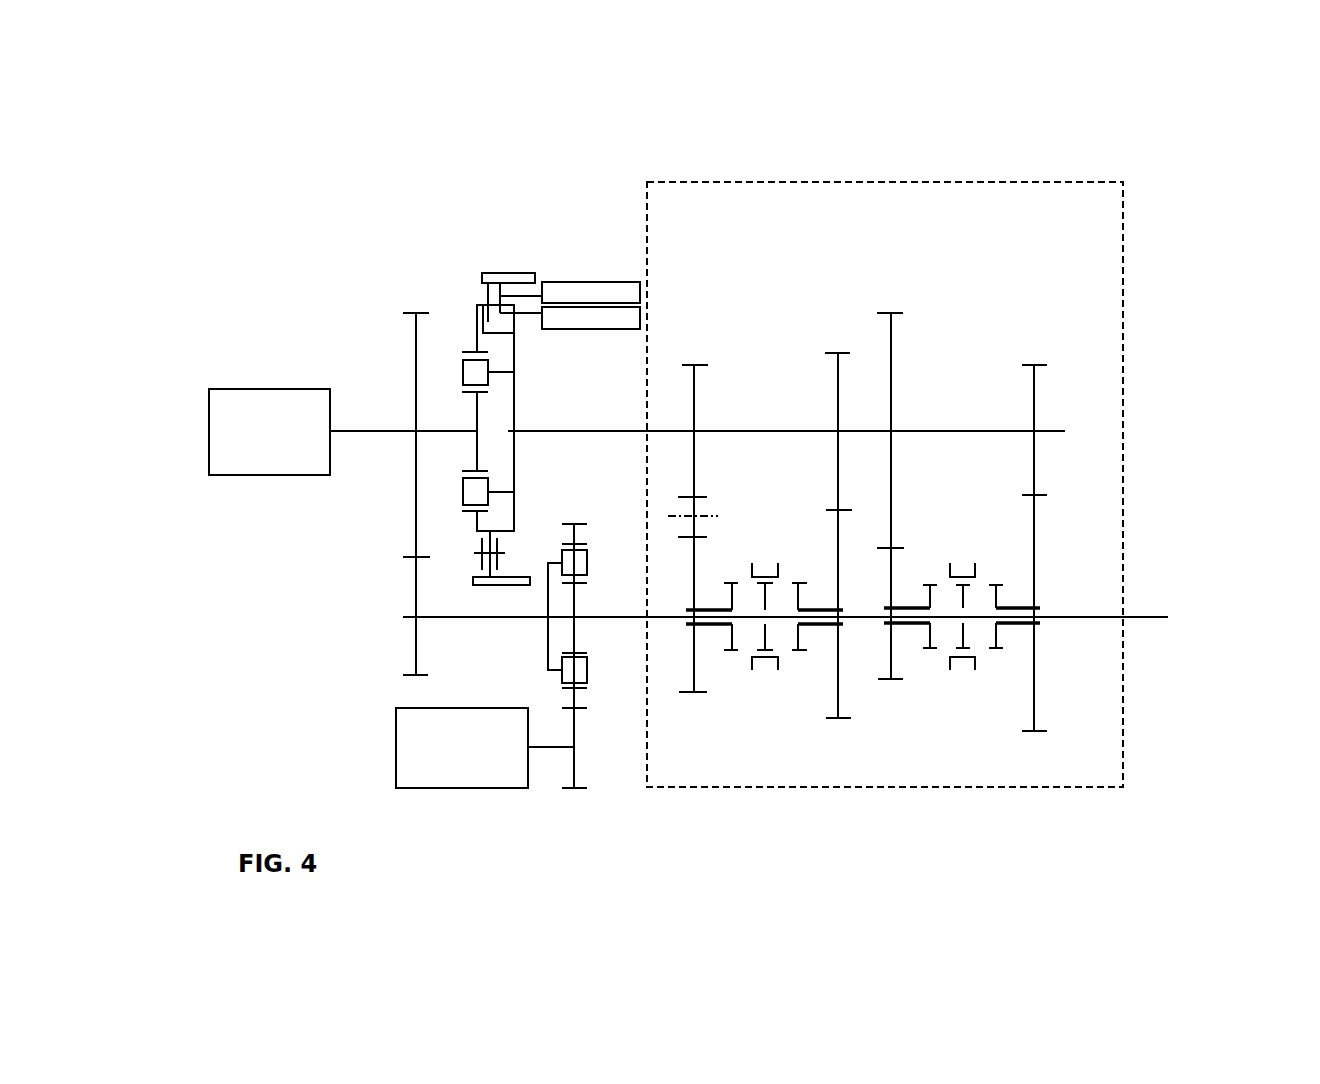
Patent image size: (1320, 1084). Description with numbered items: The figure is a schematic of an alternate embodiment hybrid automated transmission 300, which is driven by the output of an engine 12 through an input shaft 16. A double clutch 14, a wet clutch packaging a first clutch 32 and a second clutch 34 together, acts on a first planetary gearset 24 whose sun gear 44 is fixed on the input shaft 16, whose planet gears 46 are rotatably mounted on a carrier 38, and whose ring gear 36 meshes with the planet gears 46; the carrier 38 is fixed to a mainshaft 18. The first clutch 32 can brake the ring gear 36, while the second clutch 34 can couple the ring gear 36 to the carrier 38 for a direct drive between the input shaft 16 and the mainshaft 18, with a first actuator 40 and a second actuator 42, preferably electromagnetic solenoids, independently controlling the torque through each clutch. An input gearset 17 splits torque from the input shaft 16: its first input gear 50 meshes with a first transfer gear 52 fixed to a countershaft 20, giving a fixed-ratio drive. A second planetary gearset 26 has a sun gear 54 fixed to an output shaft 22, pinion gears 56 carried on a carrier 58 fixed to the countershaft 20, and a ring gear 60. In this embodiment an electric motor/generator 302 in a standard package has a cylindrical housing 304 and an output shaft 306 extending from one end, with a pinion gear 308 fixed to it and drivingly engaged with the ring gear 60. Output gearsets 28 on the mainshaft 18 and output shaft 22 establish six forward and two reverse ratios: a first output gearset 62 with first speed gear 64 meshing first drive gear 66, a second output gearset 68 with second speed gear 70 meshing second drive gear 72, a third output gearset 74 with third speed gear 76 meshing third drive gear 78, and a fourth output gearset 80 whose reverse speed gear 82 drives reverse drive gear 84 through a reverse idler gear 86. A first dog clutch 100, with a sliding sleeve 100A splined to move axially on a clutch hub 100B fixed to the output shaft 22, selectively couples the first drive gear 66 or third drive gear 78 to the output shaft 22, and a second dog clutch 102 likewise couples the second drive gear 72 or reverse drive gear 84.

The transmission 300 is at (1152, 143).
The engine 12 is at (257, 386).
The input shaft 16 is at (362, 430).
The input gearset 17 is at (398, 342).
The mainshaft 18 is at (598, 431).
The countershaft 20 is at (448, 620).
The output shaft 22 is at (1143, 615).
The first planetary gearset 24 is at (468, 318).
The double clutch 14 is at (505, 266).
The first clutch 32 is at (483, 290).
The second clutch 34 is at (503, 320).
The ring gear 36 is at (476, 330).
The carrier 38 is at (515, 392).
The first actuator 40 is at (596, 282).
The second actuator 42 is at (608, 330).
The sun gear 44 is at (468, 392).
The planet gears 46 is at (470, 368).
The first input gear 50 is at (416, 485).
The first transfer gear 52 is at (416, 648).
The second planetary gearset 26 is at (543, 633).
The sun gear 54 is at (578, 605).
The pinion gears 56 is at (578, 570).
The carrier 58 is at (548, 598).
The ring gear 60 is at (578, 702).
The electric motor/generator 302 is at (503, 788).
The cylindrical housing 304 is at (467, 788).
The output shaft 306 is at (548, 748).
The pinion gear 308 is at (578, 765).
The output gearsets 28 is at (1082, 395).
The first output gearset 62 is at (1015, 356).
The first speed gear 64 is at (1034, 402).
The first drive gear 66 is at (1034, 512).
The second output gearset 68 is at (820, 340).
The second speed gear 70 is at (838, 393).
The second drive gear 72 is at (838, 555).
The third output gearset 74 is at (920, 302).
The third speed gear 76 is at (892, 345).
The third drive gear 78 is at (892, 578).
The fourth output gearset 80 is at (710, 348).
The reverse speed gear 82 is at (696, 402).
The reverse drive gear 84 is at (695, 568).
The reverse idler gear 86 is at (700, 505).
The first dog clutch 100 is at (997, 665).
The sliding sleeve 100A is at (1007, 541).
The clutch hub 100B is at (963, 637).
The second dog clutch 102 is at (793, 665).